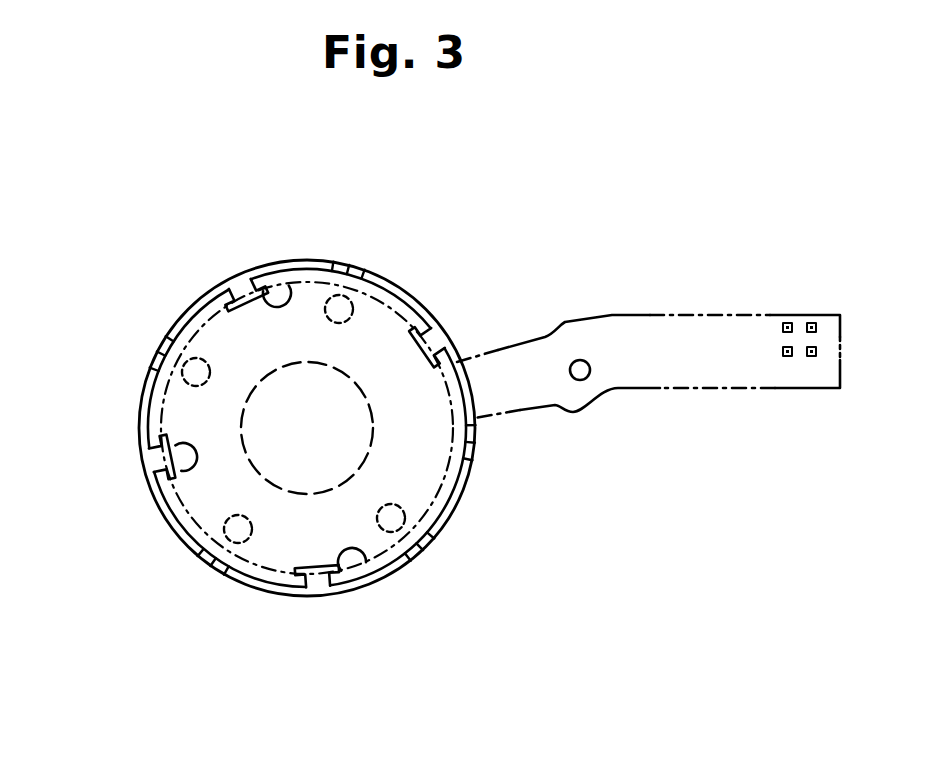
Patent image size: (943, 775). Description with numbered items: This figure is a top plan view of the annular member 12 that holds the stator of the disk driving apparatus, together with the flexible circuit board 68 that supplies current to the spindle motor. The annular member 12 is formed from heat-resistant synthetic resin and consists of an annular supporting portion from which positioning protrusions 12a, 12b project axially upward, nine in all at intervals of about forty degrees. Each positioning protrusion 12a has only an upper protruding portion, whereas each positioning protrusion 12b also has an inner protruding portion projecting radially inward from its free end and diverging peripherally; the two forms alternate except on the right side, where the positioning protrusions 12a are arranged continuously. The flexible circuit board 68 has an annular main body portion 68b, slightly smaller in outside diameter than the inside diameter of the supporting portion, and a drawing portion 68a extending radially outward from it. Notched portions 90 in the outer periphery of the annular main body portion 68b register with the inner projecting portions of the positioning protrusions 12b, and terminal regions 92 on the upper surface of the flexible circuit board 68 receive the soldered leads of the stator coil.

The annular member 12 is at (463, 490).
The positioning protrusion 12a is at (160, 353).
The positioning protrusion 12b is at (240, 276).
The flexible circuit board 68 is at (247, 562).
The drawing portion 68a is at (522, 396).
The annular main body portion 68b is at (590, 370).
The notched portion 90 is at (293, 285).
The terminal region 92 is at (338, 296).